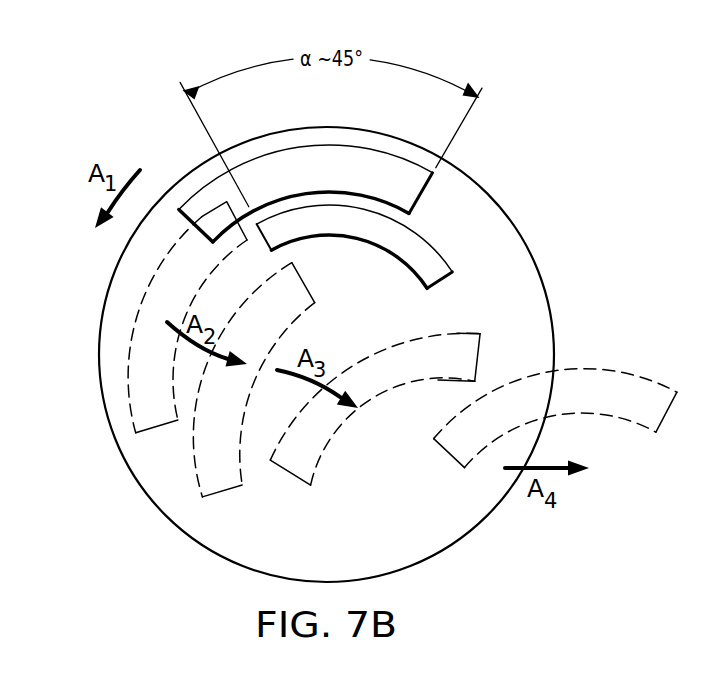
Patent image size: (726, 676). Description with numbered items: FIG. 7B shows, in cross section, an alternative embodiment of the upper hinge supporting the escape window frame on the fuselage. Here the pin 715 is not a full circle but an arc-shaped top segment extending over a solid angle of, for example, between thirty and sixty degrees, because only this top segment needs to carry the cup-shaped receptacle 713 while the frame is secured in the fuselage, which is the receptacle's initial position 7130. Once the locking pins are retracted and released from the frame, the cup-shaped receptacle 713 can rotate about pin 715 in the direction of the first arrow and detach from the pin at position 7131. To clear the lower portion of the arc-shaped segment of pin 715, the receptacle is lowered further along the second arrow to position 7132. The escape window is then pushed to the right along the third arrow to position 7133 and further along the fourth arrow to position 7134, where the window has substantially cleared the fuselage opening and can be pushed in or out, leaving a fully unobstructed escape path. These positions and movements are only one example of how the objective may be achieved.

The cup-shaped receptacle 713 is at (365, 150).
The pin 715 is at (462, 238).
The position of the cup-shaped receptacle 7130 is at (200, 190).
The position of the cup-shaped receptacle 7131 is at (127, 343).
The position of the cup-shaped receptacle 7132 is at (223, 493).
The position of the cup-shaped receptacle 7133 is at (393, 347).
The position of the cup-shaped receptacle 7134 is at (592, 368).